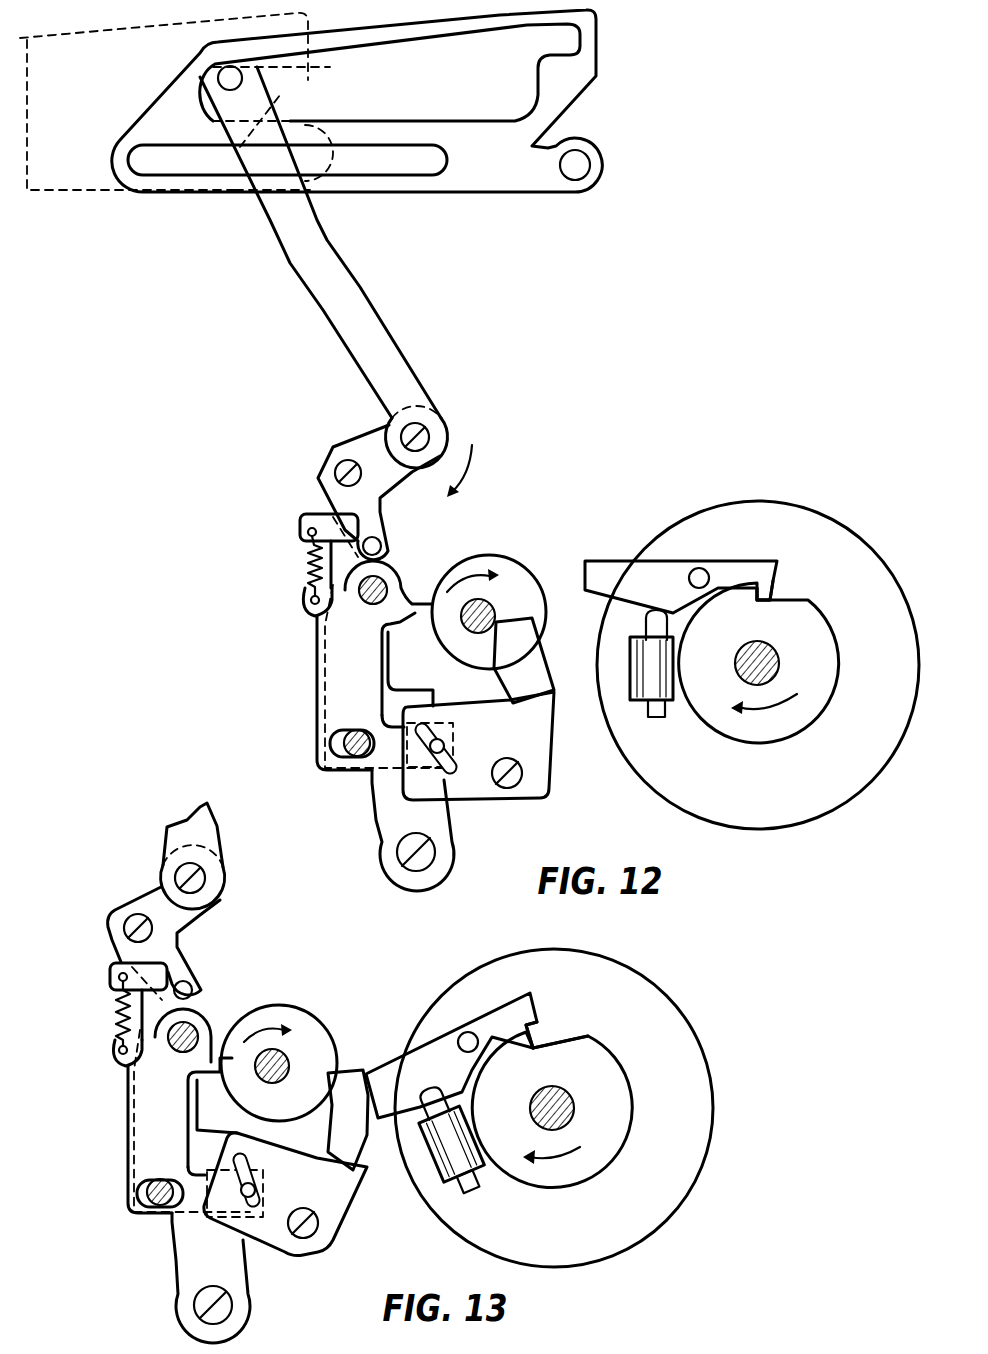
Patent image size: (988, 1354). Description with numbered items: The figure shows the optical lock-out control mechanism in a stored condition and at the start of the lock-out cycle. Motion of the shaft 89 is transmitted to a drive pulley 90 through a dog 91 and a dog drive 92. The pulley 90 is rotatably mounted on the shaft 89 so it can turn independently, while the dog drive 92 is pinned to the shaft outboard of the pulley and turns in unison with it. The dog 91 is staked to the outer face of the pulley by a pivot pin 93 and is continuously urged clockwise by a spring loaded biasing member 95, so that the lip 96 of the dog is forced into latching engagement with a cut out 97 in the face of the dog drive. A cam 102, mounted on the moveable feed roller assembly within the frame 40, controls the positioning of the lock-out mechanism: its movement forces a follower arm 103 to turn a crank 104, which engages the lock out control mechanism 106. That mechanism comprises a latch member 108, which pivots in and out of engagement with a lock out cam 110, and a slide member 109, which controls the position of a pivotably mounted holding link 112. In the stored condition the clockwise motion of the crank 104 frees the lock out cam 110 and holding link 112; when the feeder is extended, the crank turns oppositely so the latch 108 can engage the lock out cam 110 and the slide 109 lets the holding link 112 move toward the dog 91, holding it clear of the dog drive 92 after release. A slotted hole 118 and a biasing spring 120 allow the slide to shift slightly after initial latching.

In FIG. 12, the frame 40 is at (323, 17).
In FIG. 12, the cam 102 is at (590, 16).
In FIG. 12, the follower arm 103 is at (378, 328).
In FIG. 13, the follower arm 103 is at (165, 828).
In FIG. 12, the crank 104 is at (358, 440).
In FIG. 13, the crank 104 is at (178, 937).
In FIG. 12, the lock out control mechanism 106 is at (296, 635).
In FIG. 13, the lock out control mechanism 106 is at (115, 1080).
In FIG. 12, the latch member 108 is at (340, 697).
In FIG. 13, the latch member 108 is at (128, 1142).
In FIG. 12, the slide member 109 is at (388, 806).
In FIG. 13, the slide member 109 is at (183, 1262).
In FIG. 12, the lock out cam 110 is at (491, 558).
In FIG. 13, the lock out cam 110 is at (328, 1035).
In FIG. 12, the holding link 112 is at (535, 750).
In FIG. 13, the holding link 112 is at (335, 1202).
In FIG. 12, the slotted hole 118 is at (328, 748).
In FIG. 13, the slotted hole 118 is at (130, 1211).
In FIG. 12, the biasing spring 120 is at (304, 562).
In FIG. 13, the biasing spring 120 is at (114, 1010).
In FIG. 12, the shaft 89 is at (766, 658).
In FIG. 13, the shaft 89 is at (575, 1110).
In FIG. 12, the drive pulley 90 is at (670, 784).
In FIG. 13, the drive pulley 90 is at (682, 1195).
In FIG. 12, the dog 91 is at (605, 560).
In FIG. 13, the dog 91 is at (378, 1090).
In FIG. 12, the dog drive 92 is at (806, 600).
In FIG. 13, the dog drive 92 is at (600, 1053).
In FIG. 12, the pivot pin 93 is at (700, 567).
In FIG. 13, the pivot pin 93 is at (473, 1032).
In FIG. 12, the spring loaded biasing member 95 is at (664, 716).
In FIG. 13, the spring loaded biasing member 95 is at (475, 1190).
In FIG. 12, the lip 96 is at (771, 596).
In FIG. 13, the lip 96 is at (538, 1024).
In FIG. 13, the cut out 97 is at (545, 1046).